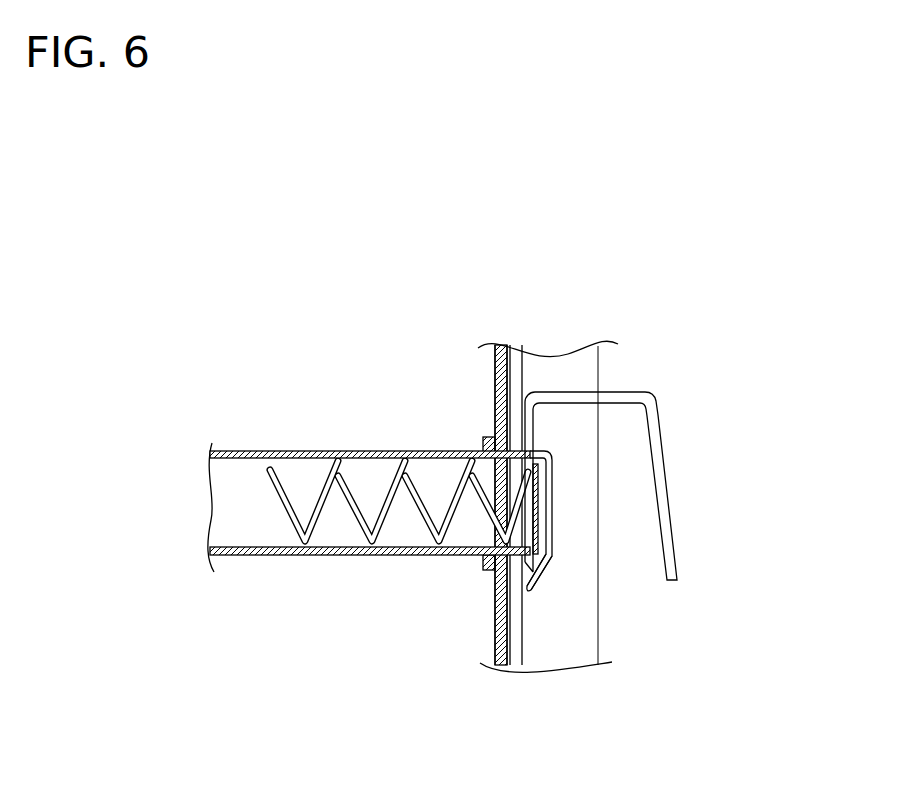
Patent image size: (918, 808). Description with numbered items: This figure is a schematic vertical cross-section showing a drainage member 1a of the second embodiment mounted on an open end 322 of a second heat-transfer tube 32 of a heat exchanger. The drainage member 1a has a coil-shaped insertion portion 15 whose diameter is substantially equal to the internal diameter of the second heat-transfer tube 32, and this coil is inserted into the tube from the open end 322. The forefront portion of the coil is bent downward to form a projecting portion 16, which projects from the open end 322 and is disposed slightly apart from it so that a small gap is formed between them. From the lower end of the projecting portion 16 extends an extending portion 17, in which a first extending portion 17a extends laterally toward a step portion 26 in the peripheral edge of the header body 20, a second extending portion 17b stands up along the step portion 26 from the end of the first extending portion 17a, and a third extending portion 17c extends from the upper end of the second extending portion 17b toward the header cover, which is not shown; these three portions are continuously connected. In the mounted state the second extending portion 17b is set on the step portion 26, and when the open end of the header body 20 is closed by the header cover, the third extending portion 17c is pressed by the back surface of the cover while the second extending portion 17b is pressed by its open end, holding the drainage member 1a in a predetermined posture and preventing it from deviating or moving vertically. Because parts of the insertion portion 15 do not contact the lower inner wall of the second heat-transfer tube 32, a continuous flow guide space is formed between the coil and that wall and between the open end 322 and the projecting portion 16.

The drainage member 1a is at (697, 579).
The insertion portion 15 is at (360, 526).
The projecting portion 16 is at (540, 560).
The extending portion 17 is at (674, 502).
The first extending portion 17a is at (525, 590).
The second extending portion 17b is at (528, 433).
The third extending portion 17c is at (653, 422).
The header body 20 is at (590, 382).
The step portion 26 is at (522, 363).
The second heat-transfer tube 32 is at (366, 450).
The open end 322 is at (530, 512).